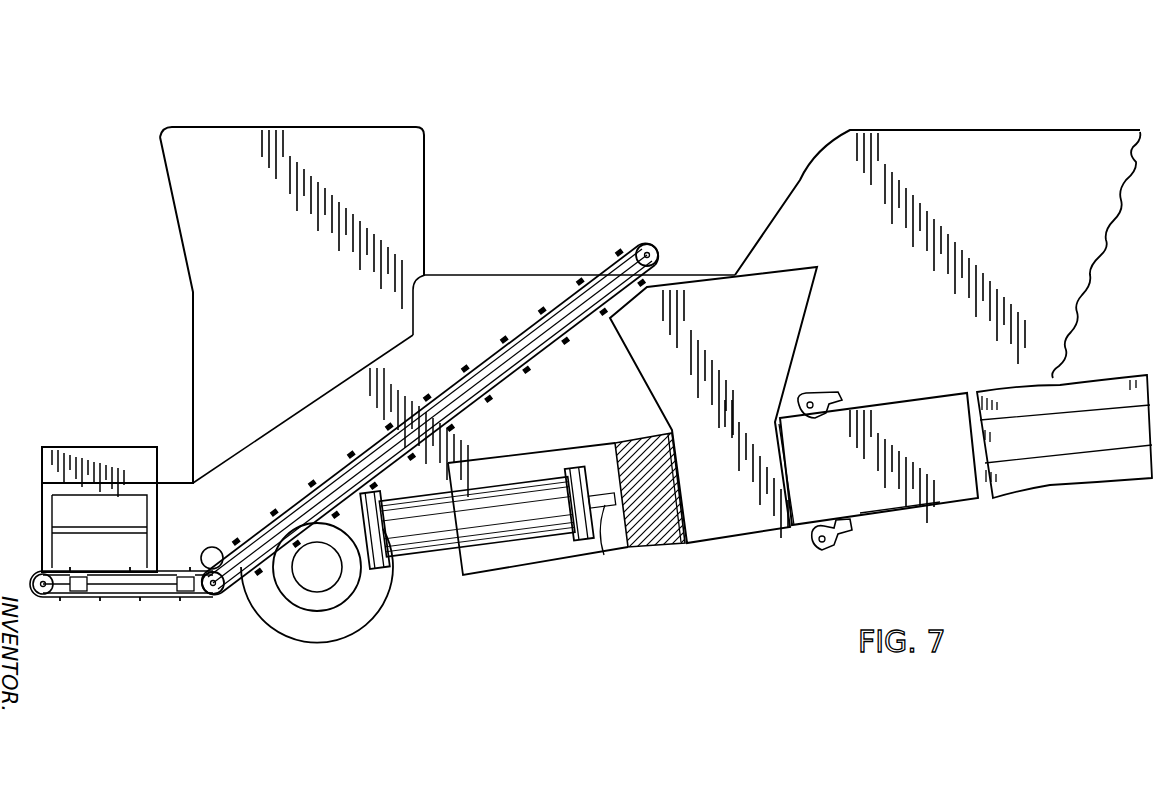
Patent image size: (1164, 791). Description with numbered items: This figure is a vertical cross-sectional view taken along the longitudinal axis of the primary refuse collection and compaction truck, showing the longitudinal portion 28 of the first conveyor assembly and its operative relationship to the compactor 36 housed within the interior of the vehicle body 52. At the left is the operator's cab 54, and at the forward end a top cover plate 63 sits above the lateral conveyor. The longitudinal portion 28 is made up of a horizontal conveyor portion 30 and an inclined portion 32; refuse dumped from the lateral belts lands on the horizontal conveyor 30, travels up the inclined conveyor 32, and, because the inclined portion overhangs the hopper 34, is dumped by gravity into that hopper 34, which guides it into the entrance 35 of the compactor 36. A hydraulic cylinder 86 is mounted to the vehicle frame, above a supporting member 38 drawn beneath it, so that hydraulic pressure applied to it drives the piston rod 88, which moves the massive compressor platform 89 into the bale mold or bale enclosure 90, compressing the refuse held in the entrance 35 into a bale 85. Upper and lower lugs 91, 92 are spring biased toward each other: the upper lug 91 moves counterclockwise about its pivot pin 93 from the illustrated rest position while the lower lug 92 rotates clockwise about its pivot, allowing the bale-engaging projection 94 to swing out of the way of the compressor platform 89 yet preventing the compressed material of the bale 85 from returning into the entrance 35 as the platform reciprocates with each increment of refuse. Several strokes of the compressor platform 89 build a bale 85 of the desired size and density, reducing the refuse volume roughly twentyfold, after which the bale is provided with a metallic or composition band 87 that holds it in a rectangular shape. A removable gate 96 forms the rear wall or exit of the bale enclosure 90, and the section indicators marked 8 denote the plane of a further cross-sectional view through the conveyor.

The section line 8- 8 is at (82, 378).
The longitudinal portion 28 is at (257, 527).
The horizontal conveyor portion 30 is at (117, 601).
The inclined portion 32 is at (488, 361).
The hopper 34 is at (763, 268).
The entrance 35 is at (724, 530).
The compactor 36 is at (874, 402).
The plate 38 is at (597, 431).
The interior of the vehicle body 52 is at (901, 285).
The cab 54 is at (337, 124).
The top cover plate 63 is at (71, 445).
The bale 85 is at (1015, 379).
The hydraulic cylinder 86 is at (561, 512).
The band 87 is at (1100, 401).
The piston rod 88 is at (593, 533).
The compressor platform 89 is at (654, 437).
The bale enclosure 90 is at (886, 523).
The upper lug 91 is at (806, 399).
The lower lug 92 is at (825, 538).
The pivot pin 93 is at (816, 403).
The bale-engaging projection 94 is at (838, 497).
The removable gate 96 is at (958, 450).